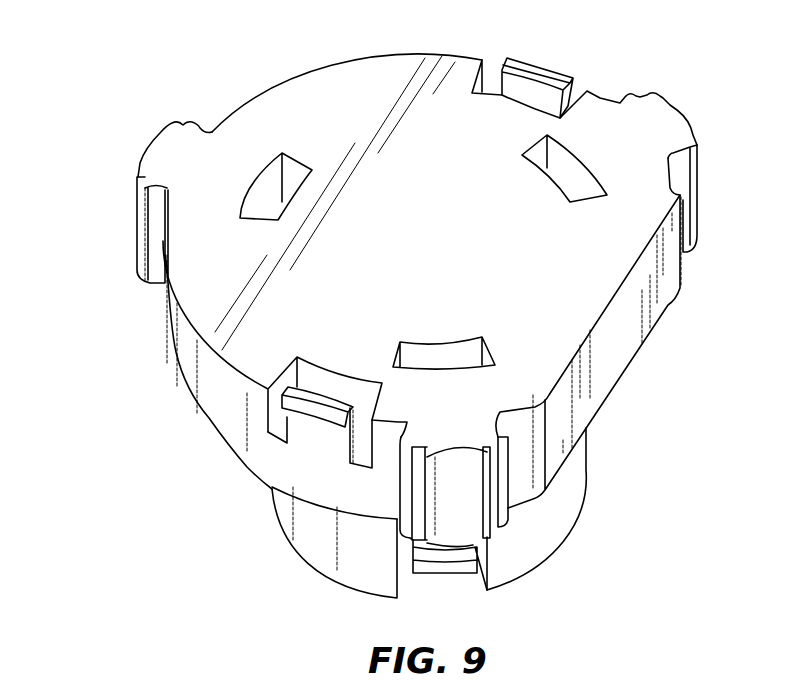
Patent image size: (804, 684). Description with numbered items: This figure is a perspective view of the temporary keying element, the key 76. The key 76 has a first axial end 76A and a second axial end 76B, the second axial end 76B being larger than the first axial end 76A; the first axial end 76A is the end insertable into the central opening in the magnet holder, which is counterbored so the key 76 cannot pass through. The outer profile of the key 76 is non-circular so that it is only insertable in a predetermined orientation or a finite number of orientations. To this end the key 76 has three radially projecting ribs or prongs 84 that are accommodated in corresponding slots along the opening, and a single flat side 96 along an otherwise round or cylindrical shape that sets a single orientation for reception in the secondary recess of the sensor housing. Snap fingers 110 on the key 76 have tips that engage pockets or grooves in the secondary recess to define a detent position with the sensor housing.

The key 76 is at (104, 190).
The first axial end 76A is at (543, 543).
The second axial end 76B is at (352, 124).
The radially projecting ribs or prongs 84 is at (157, 143).
The single flat side 96 is at (613, 353).
The snap fingers 110 is at (538, 74).